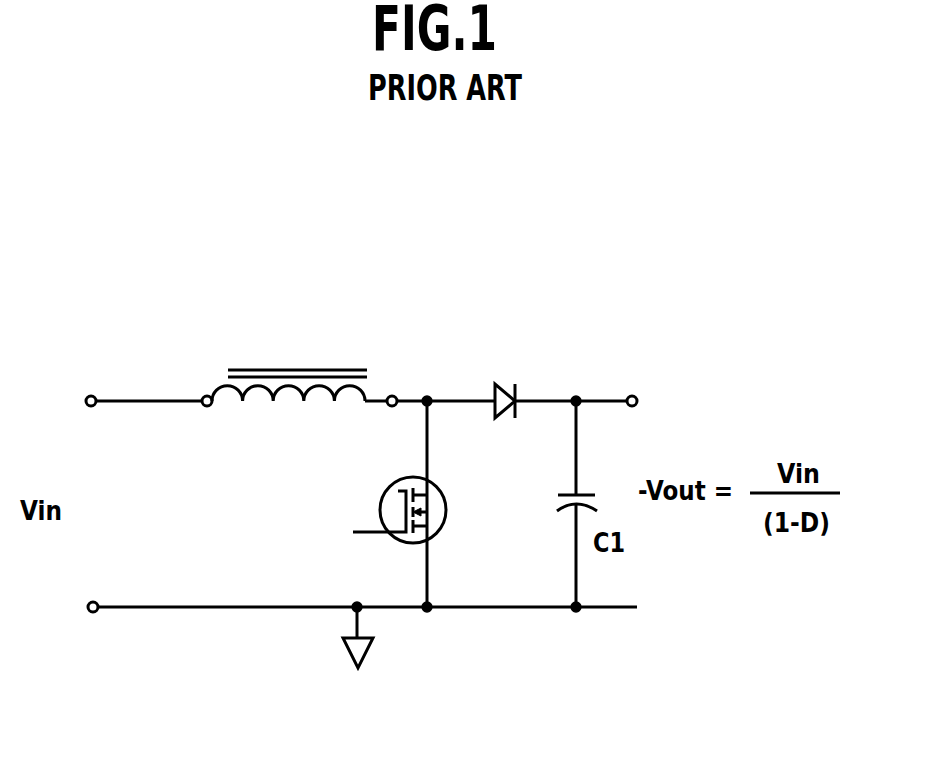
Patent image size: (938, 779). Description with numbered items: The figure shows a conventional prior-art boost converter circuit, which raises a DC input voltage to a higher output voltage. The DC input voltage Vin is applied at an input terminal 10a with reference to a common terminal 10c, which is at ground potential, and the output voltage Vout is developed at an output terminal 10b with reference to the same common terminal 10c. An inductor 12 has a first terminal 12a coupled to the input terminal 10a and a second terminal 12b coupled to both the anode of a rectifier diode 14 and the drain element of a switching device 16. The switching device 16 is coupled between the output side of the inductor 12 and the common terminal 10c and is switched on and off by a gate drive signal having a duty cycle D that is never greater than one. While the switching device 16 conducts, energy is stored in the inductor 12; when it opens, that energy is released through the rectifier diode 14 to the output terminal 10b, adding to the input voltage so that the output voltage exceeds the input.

The input terminal 10a is at (90, 384).
The output terminal 10b is at (636, 381).
The common terminal 10c is at (74, 630).
The inductor 12 is at (257, 360).
The first terminal 12a is at (206, 396).
The second terminal 12b is at (392, 396).
The rectifier diode 14 is at (508, 380).
The switching device 16 is at (380, 482).